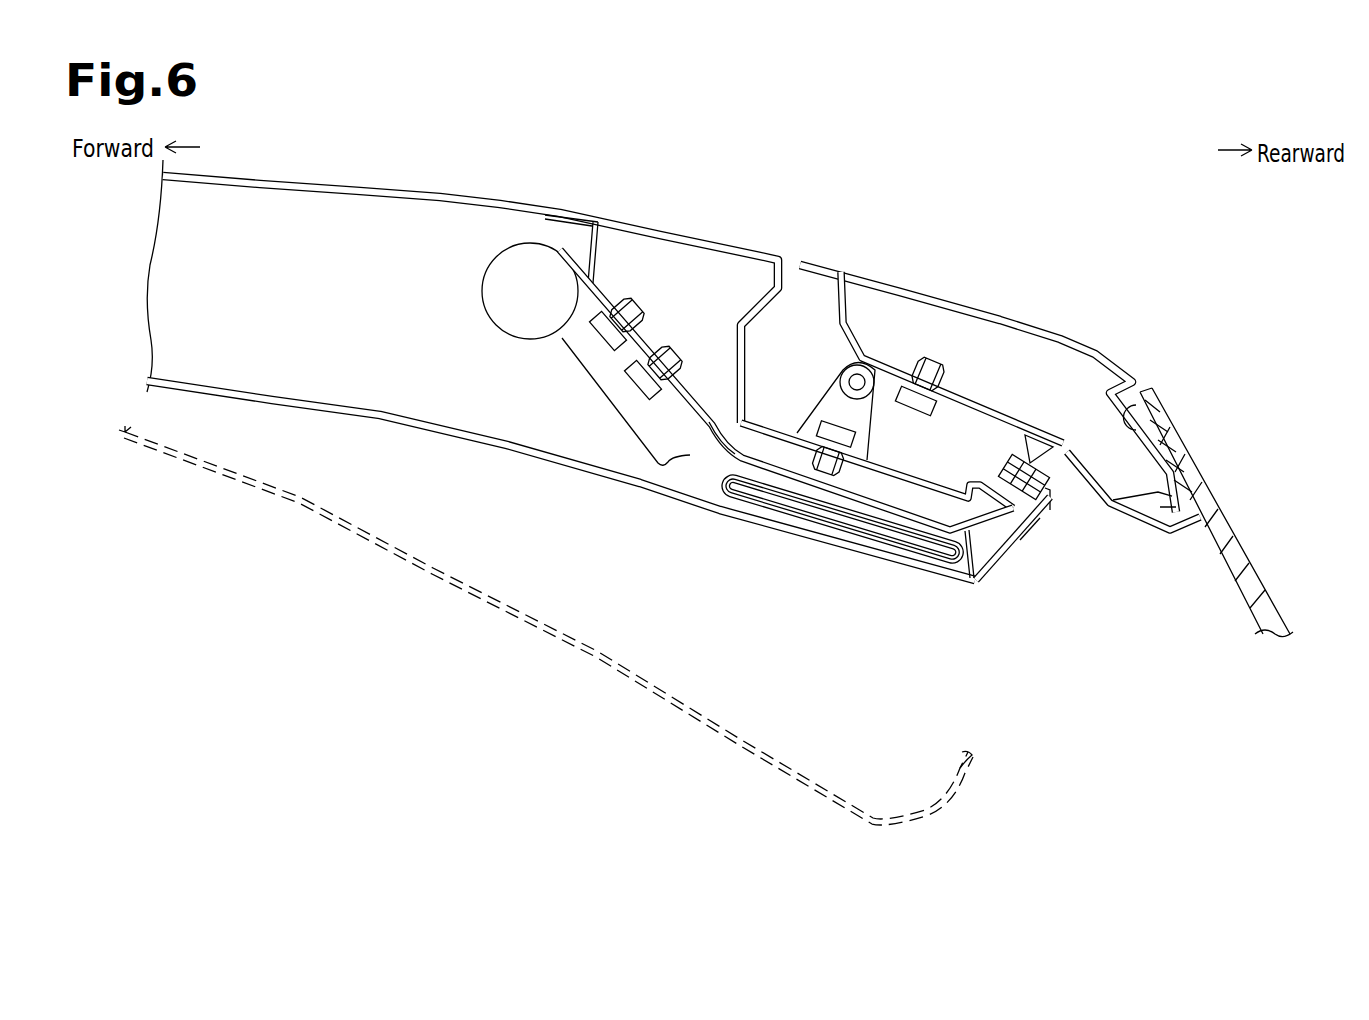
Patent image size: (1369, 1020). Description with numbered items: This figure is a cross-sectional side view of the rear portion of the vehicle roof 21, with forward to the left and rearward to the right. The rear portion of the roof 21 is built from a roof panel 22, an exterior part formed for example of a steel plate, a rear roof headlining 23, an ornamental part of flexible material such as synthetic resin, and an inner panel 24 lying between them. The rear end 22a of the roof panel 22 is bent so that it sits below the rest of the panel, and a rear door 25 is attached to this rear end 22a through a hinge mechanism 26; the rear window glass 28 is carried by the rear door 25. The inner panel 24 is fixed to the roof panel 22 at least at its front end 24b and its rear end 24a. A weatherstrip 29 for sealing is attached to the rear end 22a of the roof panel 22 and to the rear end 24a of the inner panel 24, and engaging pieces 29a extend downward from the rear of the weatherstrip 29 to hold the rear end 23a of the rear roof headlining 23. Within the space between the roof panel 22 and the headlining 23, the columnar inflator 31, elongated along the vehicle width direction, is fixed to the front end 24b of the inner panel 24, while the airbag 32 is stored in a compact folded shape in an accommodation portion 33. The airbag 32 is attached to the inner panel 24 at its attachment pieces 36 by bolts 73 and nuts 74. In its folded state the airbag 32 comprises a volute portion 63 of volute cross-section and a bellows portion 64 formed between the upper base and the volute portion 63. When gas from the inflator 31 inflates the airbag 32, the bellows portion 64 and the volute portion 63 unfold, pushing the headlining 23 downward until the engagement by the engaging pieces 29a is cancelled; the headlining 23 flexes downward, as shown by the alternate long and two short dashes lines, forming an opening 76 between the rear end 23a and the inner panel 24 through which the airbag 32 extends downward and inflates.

The roof 21 is at (640, 217).
The roof panel 22 is at (410, 192).
The rear end of the roof panel 22a is at (910, 480).
The rear roof headlining 23 is at (272, 402).
The rear end of the rear roof headlining 23a is at (1033, 537).
The inner panel 24 is at (688, 394).
The rear end of the inner panel 24a is at (1008, 565).
The front end of the inner panel 24b is at (597, 251).
The rear door 25 is at (921, 285).
The hinge mechanism 26 is at (823, 400).
The rear window glass 28 is at (1197, 466).
The weatherstrip 29 is at (1066, 452).
The engaging pieces 29a is at (1055, 490).
The inflator 31 is at (485, 282).
The airbag 32 is at (775, 553).
The accommodation portion 33 is at (579, 427).
The attachment pieces 36 is at (687, 420).
The volute portion 63 is at (903, 560).
The bellows portion 64 is at (975, 585).
The bolts 73 is at (647, 390).
The nuts 74 is at (658, 350).
The opening 76 is at (970, 756).